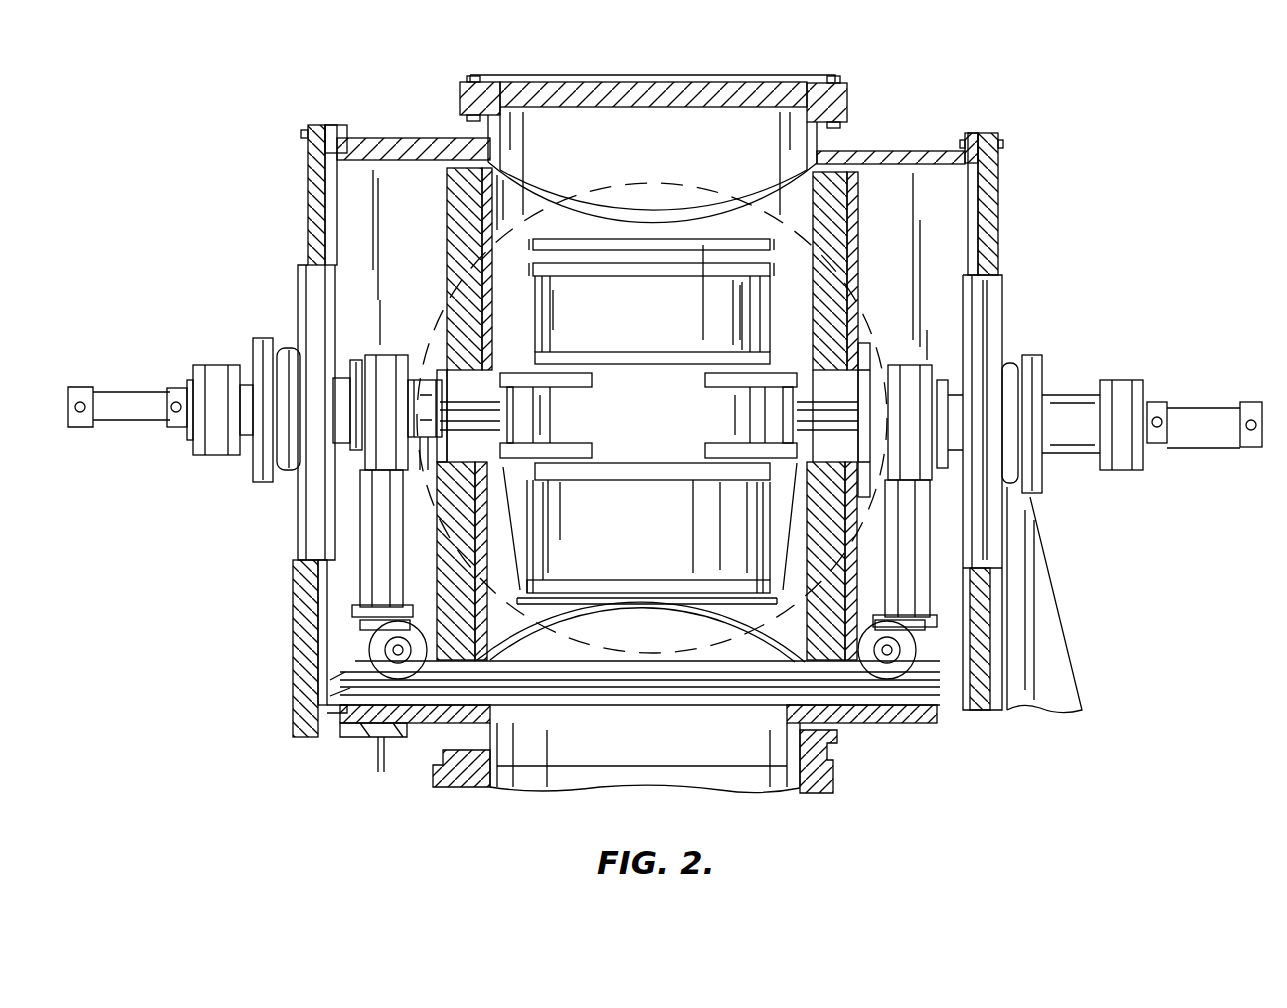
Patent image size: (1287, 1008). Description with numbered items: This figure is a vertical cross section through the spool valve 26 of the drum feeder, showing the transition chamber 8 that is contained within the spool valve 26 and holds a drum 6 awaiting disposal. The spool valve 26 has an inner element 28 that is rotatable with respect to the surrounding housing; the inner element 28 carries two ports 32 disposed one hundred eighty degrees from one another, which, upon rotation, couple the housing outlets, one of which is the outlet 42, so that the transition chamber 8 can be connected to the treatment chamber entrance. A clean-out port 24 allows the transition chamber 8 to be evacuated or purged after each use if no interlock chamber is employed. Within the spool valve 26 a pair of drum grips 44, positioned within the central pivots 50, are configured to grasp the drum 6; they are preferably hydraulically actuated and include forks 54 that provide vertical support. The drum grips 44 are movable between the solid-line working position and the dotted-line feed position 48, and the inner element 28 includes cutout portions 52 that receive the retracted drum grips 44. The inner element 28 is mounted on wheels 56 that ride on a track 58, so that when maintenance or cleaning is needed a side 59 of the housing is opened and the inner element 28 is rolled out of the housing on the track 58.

The drum 6 is at (745, 315).
The transition chamber 8 is at (545, 325).
The clean-out port 24 is at (752, 77).
The spool valve 26 is at (1019, 91).
The inner element 28 is at (433, 230).
The ports 32 is at (587, 240).
The outlet 42 is at (817, 748).
The drum grips 44 is at (562, 443).
The feed position 48 is at (442, 350).
The central pivots 50 is at (342, 368).
The cutout portions 52 is at (847, 555).
The forks 54 is at (532, 604).
The wheels 56 is at (396, 662).
The track 58 is at (360, 678).
The side 59 is at (1000, 183).